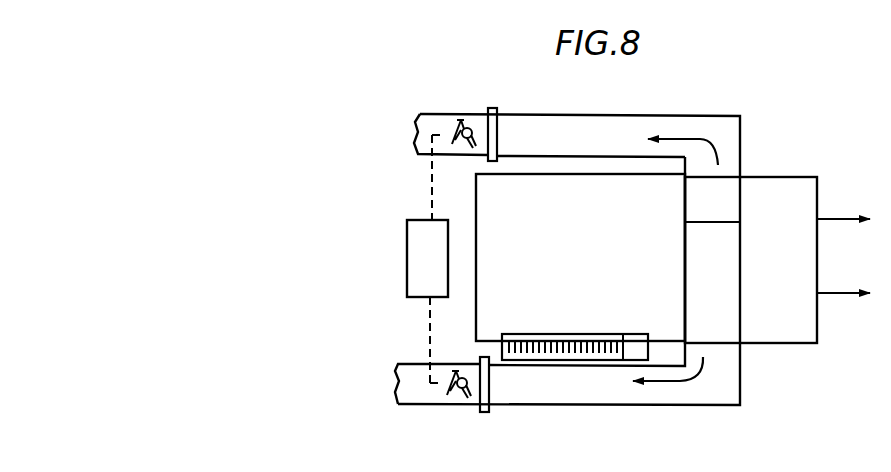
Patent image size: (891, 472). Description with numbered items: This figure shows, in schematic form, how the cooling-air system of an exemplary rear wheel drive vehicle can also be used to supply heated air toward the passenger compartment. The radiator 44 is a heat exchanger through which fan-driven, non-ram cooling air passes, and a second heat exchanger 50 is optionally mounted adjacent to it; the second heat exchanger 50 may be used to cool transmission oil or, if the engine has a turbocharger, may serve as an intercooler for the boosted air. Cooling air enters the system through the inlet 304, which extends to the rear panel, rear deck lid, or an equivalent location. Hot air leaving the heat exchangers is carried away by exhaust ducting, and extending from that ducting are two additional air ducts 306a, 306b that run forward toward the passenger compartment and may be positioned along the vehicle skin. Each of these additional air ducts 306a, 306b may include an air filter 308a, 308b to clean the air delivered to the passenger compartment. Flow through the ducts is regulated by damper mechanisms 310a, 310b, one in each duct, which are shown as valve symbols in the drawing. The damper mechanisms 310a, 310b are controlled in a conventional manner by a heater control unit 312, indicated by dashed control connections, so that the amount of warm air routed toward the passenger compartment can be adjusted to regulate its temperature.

The radiator 44 is at (723, 312).
The second heat exchanger 50 is at (726, 207).
The inlet 304 is at (508, 334).
The additional air duct 306a is at (682, 383).
The additional air duct 306b is at (684, 139).
The air filter 308a is at (495, 386).
The air filter 308b is at (498, 130).
The damper mechanism 310a is at (455, 393).
The damper mechanism 310b is at (472, 124).
The heater control unit 312 is at (418, 268).